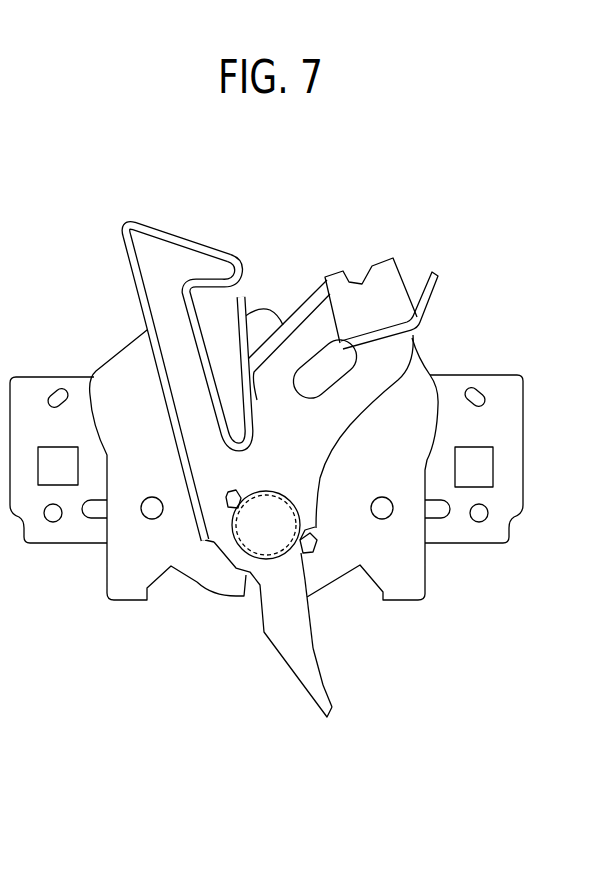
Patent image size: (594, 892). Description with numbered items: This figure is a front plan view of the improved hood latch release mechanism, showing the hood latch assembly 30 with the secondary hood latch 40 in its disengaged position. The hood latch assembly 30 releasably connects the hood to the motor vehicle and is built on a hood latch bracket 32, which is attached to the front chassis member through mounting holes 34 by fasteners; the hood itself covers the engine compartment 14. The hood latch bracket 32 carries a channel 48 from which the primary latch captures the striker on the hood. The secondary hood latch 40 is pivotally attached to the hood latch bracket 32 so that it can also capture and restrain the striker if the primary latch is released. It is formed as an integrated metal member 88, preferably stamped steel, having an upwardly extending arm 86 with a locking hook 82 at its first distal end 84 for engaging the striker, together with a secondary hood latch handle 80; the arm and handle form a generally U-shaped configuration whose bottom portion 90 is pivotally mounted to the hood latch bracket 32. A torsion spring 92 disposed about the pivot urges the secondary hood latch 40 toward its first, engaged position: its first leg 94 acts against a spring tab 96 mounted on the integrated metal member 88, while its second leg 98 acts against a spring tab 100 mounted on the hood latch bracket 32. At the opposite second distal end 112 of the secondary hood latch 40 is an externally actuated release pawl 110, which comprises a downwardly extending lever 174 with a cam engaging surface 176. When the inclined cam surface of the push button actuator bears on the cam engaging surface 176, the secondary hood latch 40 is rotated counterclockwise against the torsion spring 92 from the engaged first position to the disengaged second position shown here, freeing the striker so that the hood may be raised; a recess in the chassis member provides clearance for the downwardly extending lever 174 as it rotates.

The engine compartment 14 is at (288, 647).
The hood latch assembly 30 is at (404, 170).
The hood latch bracket 32 is at (498, 388).
The mounting holes 34 is at (491, 463).
The secondary hood latch 40 is at (283, 471).
The channel 48 is at (250, 311).
The secondary hood latch handle 80 is at (383, 282).
The locking hook 82 is at (207, 260).
The first distal end 84 is at (143, 233).
The upwardly extending arm 86 is at (158, 372).
The integrated metal member 88 is at (398, 350).
The bottom portion 90 is at (321, 537).
The torsion spring 92 is at (288, 496).
The first leg 94 is at (320, 528).
The spring tab 96 is at (304, 549).
The second leg 98 is at (232, 494).
The spring tab 100 is at (240, 496).
The externally actuated release pawl 110 is at (318, 673).
The second distal end 112 is at (250, 590).
The downwardly extending lever 174 is at (317, 645).
The cam engaging surface 176 is at (310, 700).